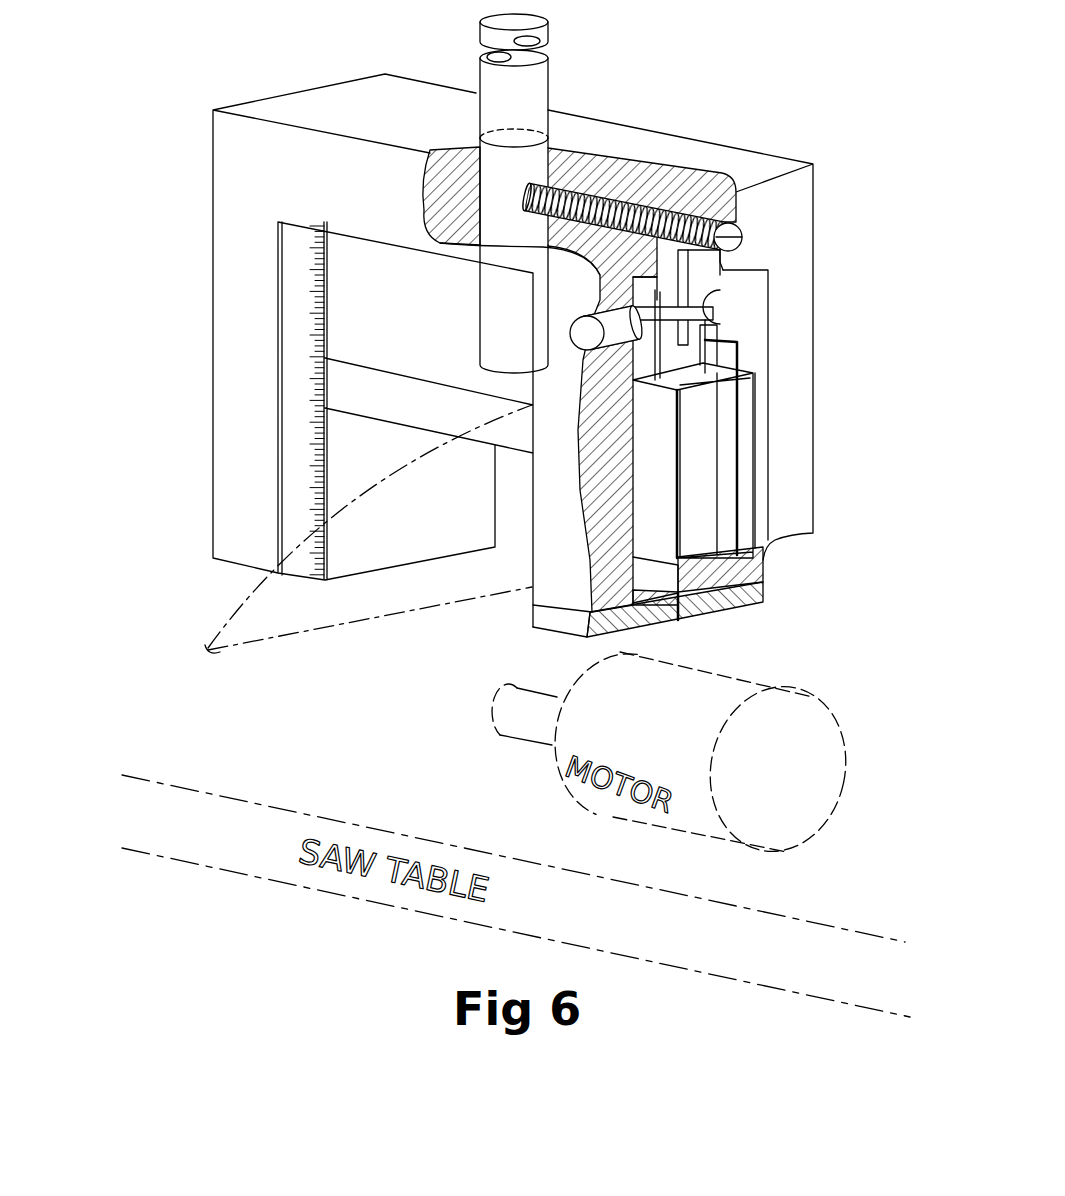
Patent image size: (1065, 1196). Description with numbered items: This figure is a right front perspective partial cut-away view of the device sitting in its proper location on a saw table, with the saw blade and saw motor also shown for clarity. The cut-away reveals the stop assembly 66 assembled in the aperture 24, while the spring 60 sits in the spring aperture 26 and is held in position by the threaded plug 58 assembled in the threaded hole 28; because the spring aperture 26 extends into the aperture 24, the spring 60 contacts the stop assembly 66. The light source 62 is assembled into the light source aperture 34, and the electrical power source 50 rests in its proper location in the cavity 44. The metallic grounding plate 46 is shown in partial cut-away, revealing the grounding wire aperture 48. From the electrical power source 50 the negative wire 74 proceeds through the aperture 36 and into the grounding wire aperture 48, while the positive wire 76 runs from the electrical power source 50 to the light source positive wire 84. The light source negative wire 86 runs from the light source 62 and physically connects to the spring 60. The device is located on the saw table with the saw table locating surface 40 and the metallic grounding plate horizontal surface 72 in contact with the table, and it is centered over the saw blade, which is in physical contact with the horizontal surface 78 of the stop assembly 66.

The aperture 24 is at (515, 135).
The spring aperture 26 is at (655, 195).
The threaded hole 28 is at (742, 233).
The light source aperture 34 is at (585, 323).
The aperture 36 is at (668, 578).
The saw table locating surface 40 is at (242, 565).
The cavity 44 is at (748, 352).
The metallic grounding plate 46 is at (757, 590).
The grounding wire aperture 48 is at (690, 618).
The electrical power source 50 is at (745, 427).
The threaded plug 58 is at (742, 240).
The spring 60 is at (603, 185).
The light source 62 is at (588, 335).
The stop assembly 66 is at (553, 70).
The metallic grounding plate horizontal surface 72 is at (548, 633).
The negative wire 74 is at (737, 484).
The positive wire 76 is at (642, 372).
The horizontal surface 78 is at (470, 438).
The light source positive wire 84 is at (668, 325).
The light source negative wire 86 is at (640, 310).